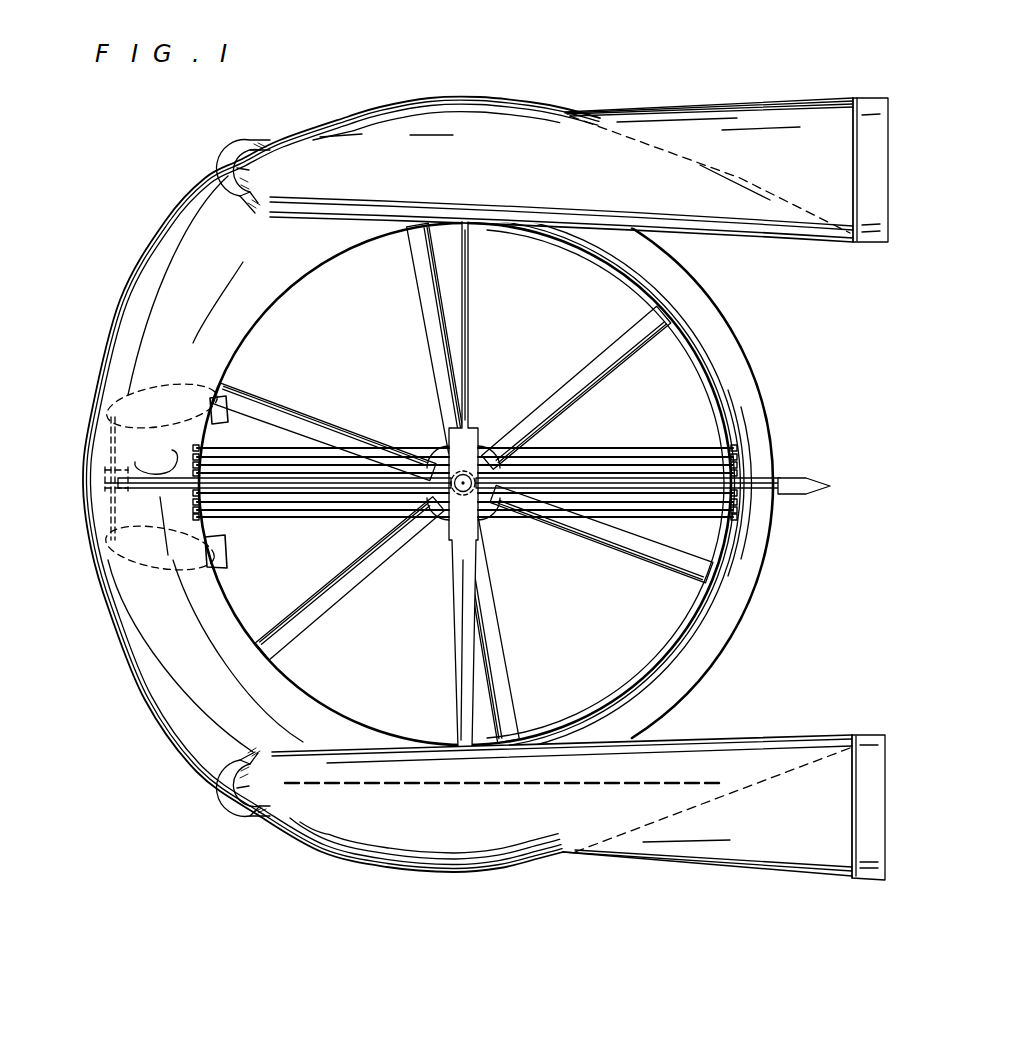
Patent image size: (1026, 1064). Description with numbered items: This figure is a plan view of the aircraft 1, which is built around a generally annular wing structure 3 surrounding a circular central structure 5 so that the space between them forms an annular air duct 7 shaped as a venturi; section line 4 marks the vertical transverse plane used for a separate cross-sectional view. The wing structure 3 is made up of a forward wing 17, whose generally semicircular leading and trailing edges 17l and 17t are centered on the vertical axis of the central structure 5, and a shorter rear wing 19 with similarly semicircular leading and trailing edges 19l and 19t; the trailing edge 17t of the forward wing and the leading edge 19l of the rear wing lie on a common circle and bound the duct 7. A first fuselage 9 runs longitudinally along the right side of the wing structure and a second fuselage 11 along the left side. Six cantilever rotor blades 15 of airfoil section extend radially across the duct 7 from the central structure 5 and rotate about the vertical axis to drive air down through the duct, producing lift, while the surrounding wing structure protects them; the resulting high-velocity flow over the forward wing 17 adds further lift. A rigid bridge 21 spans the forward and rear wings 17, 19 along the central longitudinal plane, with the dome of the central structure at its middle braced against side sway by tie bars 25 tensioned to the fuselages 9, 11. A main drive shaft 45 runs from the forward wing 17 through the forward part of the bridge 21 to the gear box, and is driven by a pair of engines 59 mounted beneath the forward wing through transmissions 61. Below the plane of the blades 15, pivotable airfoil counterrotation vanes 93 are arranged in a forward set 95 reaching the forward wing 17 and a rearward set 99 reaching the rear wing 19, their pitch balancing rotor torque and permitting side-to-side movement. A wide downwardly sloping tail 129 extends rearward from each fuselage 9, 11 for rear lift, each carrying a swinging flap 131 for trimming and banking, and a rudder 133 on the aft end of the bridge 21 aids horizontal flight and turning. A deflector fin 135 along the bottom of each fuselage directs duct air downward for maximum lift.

The aircraft 1 is at (672, 57).
The annular wing structure 3 is at (150, 226).
The section line 4 is at (474, 47).
The central structure 5 is at (437, 444).
The annular air duct 7 is at (456, 515).
The first fuselage 9 is at (390, 103).
The second fuselage 11 is at (326, 860).
The rotor blades 15 is at (425, 318).
The forward wing 17 is at (145, 335).
The leading edge of forward wing 17l is at (108, 660).
The trailing edge of forward wing 17t is at (235, 610).
The rear wing 19 is at (718, 332).
The leading edge of rear wing 19l is at (672, 650).
The trailing edge of rear wing 19t is at (758, 605).
The bridge 21 is at (284, 502).
The tie bars 25 is at (482, 432).
The main drive shaft 45 is at (180, 458).
The engines 59 is at (222, 368).
The transmissions 61 is at (105, 432).
The counterrotation vanes 93 is at (700, 426).
The forward set of vanes 95 is at (385, 430).
The rearward set of vanes 99 is at (684, 526).
The tail 129 is at (812, 133).
The flap 131 is at (877, 170).
The rudder 133 is at (805, 484).
The deflector fin 135 is at (520, 790).